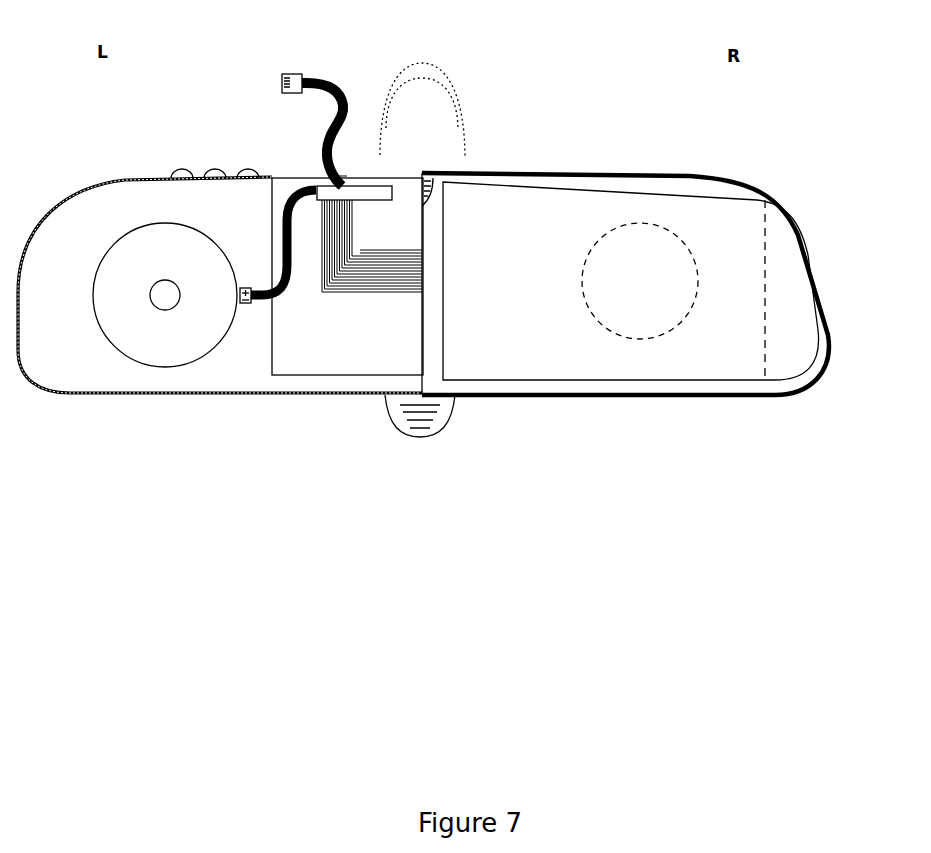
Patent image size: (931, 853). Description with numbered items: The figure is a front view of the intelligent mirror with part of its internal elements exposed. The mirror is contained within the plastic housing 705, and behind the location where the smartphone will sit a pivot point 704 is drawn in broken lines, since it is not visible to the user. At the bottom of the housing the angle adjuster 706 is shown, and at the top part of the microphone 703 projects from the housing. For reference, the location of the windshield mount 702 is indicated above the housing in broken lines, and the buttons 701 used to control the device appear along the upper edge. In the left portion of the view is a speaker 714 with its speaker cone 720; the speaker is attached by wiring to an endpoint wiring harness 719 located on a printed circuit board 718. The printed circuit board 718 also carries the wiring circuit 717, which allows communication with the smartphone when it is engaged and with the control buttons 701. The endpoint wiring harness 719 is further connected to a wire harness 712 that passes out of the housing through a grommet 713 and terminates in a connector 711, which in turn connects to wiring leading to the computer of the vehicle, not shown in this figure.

The buttons 701 is at (215, 162).
The windshield mount 702 is at (465, 81).
The microphone 703 is at (438, 180).
The pivot point 704 is at (678, 222).
The plastic housing 705 is at (834, 308).
The angle adjuster 706 is at (458, 431).
The connector 711 is at (293, 64).
The wire harness 712 is at (333, 76).
The grommet 713 is at (343, 170).
The speaker 714 is at (168, 376).
The wiring circuit 717 is at (373, 305).
The printed circuit board 718 is at (329, 385).
The endpoint wiring harness 719 is at (312, 207).
The speaker cone 720 is at (159, 317).